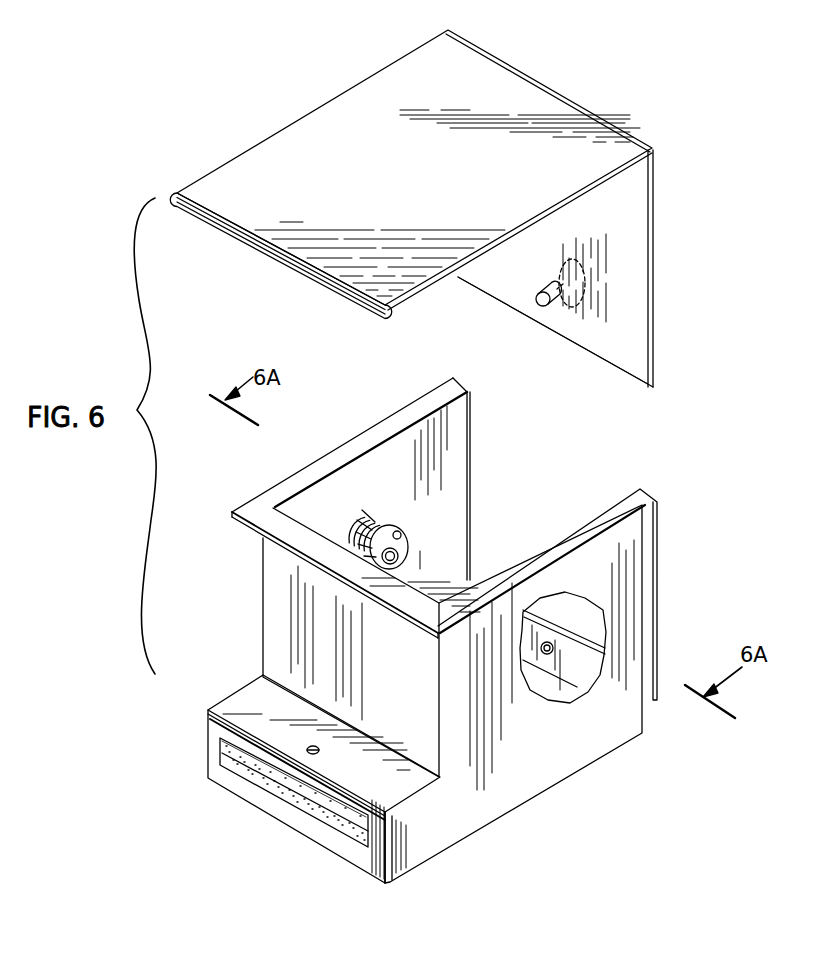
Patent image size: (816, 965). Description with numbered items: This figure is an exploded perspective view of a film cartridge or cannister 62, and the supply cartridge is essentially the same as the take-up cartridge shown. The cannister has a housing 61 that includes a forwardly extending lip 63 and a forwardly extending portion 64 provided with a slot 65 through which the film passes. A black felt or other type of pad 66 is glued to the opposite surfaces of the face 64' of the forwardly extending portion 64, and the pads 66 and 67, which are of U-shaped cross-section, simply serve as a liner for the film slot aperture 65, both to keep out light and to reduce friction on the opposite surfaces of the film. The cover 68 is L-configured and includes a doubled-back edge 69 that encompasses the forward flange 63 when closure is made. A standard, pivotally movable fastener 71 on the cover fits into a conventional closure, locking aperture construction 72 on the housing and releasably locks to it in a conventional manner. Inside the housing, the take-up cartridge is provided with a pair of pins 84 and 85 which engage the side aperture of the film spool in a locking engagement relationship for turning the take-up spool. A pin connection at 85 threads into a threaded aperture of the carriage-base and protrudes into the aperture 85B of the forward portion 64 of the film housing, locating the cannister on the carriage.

The cover 68 is at (515, 116).
The doubled-back edge 69 is at (400, 318).
The pivotally movable fastener 71 is at (543, 299).
The forwardly extending lip 63 is at (280, 532).
The pin 84 is at (398, 566).
The pin 85 is at (404, 537).
The locking aperture construction 72 is at (554, 650).
The housing 61 is at (548, 743).
The film take-up cartridge or cannister 62 is at (512, 788).
The forwardly extending portion 64 is at (295, 779).
The slot 65 is at (263, 776).
The pad 66 is at (310, 810).
The pad 67 is at (265, 770).
The face 64' is at (362, 878).
The aperture 85B is at (322, 750).